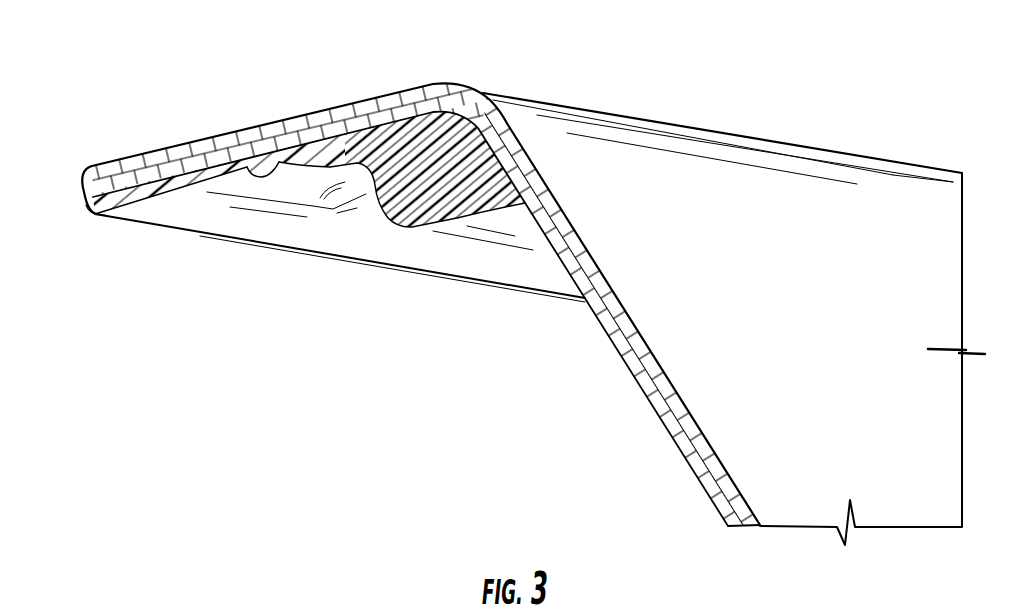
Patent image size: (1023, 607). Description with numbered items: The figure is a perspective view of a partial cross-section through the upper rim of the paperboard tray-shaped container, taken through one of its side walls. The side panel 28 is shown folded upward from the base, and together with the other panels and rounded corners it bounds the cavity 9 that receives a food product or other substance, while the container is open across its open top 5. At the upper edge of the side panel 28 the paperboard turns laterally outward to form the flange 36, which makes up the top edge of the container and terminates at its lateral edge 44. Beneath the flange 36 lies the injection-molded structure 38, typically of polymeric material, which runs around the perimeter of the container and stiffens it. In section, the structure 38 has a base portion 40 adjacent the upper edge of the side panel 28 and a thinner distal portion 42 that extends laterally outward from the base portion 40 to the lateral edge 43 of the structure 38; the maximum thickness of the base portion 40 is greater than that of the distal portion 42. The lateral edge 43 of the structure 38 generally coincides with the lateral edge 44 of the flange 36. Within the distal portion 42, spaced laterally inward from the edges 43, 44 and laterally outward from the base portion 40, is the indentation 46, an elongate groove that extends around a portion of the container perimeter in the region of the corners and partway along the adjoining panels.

The open top 5 is at (541, 92).
The cavity 9 is at (884, 268).
The side panel 28 is at (866, 403).
The flange 36 is at (195, 140).
The injection-molded structure 38 is at (310, 228).
The base portion 40 is at (452, 214).
The distal portion 42 is at (173, 191).
The lateral edge 43 is at (93, 209).
The lateral edge 44 is at (90, 178).
The indentation 46 is at (257, 173).